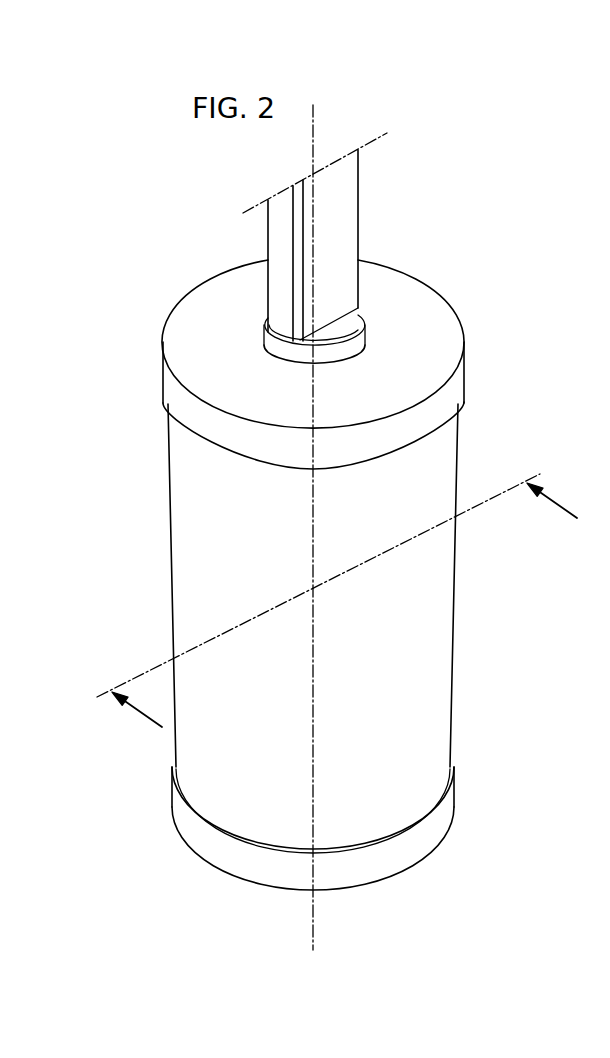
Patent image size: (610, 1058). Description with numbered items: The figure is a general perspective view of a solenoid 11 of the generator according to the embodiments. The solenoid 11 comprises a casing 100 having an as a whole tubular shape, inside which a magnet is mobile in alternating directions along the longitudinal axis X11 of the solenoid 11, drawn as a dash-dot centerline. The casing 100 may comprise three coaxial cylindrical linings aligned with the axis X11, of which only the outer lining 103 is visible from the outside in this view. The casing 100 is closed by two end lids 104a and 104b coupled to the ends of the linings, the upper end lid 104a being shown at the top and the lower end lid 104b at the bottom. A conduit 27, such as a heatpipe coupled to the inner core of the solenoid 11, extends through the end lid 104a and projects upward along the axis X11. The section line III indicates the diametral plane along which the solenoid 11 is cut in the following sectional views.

The casing 100 is at (499, 333).
The solenoid 11 is at (149, 560).
The end lid 104a is at (196, 301).
The end lid 104b is at (435, 837).
The outer lining 103 is at (430, 652).
The conduit 27 is at (337, 219).
The longitudinal axis X11 is at (315, 115).
The section line III is at (351, 612).